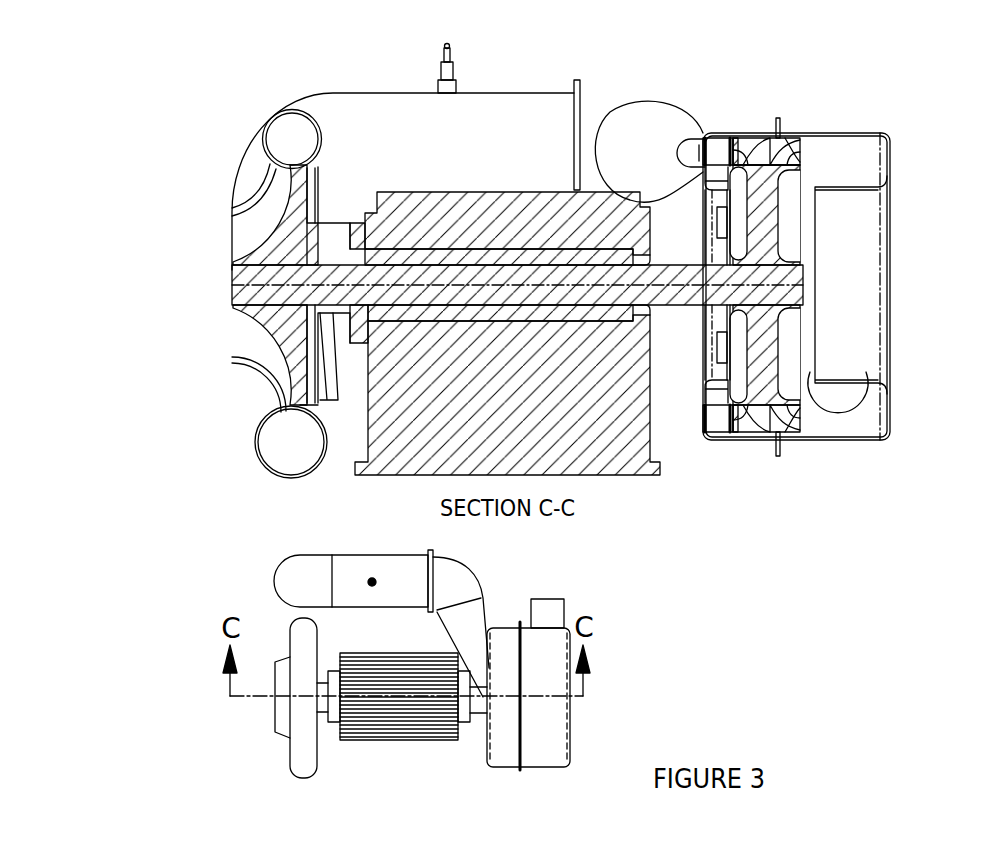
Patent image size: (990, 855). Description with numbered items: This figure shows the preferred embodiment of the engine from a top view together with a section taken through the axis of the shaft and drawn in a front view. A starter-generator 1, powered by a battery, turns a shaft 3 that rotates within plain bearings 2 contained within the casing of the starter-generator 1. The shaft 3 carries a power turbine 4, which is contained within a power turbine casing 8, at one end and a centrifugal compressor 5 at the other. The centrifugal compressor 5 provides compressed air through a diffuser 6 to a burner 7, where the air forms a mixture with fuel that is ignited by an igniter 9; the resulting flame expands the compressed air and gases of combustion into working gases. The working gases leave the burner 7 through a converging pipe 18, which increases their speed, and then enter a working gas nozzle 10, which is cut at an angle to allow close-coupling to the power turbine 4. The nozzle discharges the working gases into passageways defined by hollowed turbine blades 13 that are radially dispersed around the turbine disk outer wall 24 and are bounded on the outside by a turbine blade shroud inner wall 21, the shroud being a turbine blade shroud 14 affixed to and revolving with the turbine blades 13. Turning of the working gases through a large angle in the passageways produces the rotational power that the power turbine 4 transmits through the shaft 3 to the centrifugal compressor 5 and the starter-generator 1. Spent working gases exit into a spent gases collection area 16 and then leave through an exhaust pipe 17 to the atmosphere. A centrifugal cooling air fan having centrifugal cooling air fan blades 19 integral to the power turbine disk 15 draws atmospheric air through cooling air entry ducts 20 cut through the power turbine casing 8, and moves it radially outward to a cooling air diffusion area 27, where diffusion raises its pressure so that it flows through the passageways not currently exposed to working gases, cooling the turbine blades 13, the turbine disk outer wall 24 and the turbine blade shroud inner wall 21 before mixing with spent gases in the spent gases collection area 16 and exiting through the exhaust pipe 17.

The starter-generator 1 is at (418, 192).
The plain bearings 2 is at (337, 314).
The shaft 3 is at (258, 315).
The power turbine 4 is at (803, 247).
The centrifugal compressor 5 is at (258, 385).
The diffuser 6 is at (350, 370).
The burner 7 is at (413, 92).
The power turbine casing 8 is at (833, 441).
The igniter 9 is at (460, 87).
The working gas nozzle 10 is at (703, 170).
The turbine blades 13 is at (745, 420).
The turbine blade shroud 14 is at (744, 138).
The power turbine disk 15 is at (772, 207).
The spent gases collection area 16 is at (855, 165).
The exhaust pipe 17 is at (838, 396).
The converging pipe 18 is at (640, 160).
The centrifugal cooling air fan blades 19 is at (738, 227).
The cooling air entry ducts 20 is at (722, 250).
The turbine blade shroud inner wall 21 is at (803, 147).
The turbine disk outer wall 24 is at (780, 133).
The cooling air diffusion area 27 is at (693, 152).